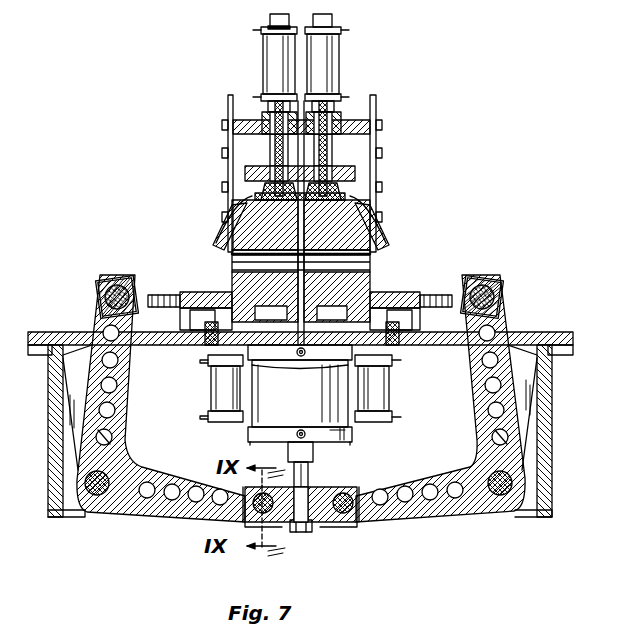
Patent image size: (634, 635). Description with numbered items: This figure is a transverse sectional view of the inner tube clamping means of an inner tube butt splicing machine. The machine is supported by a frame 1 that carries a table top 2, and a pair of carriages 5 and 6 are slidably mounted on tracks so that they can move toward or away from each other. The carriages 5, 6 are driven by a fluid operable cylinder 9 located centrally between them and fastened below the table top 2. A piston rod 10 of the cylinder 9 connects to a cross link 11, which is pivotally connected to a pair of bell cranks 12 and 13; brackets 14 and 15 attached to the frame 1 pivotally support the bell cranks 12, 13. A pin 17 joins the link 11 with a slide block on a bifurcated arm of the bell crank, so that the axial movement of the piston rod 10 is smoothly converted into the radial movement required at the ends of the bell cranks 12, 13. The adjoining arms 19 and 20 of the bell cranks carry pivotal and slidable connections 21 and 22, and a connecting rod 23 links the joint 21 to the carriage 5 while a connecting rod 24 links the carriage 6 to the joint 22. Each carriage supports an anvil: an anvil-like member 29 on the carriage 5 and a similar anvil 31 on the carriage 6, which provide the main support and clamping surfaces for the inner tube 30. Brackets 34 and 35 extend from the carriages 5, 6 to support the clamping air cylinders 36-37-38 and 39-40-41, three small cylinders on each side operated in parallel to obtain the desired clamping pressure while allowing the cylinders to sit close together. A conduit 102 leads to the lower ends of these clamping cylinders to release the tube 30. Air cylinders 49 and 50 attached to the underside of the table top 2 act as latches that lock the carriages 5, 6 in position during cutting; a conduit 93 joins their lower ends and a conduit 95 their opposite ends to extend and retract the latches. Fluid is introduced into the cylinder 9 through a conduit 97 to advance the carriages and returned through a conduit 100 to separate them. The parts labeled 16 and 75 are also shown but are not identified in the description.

The frame 1 is at (553, 432).
The table top 2 is at (560, 334).
The carriage 5 is at (232, 278).
The carriage 6 is at (368, 280).
The fluid operable cylinder 9 is at (352, 434).
The piston rod 10 is at (310, 500).
The cross link 11 is at (325, 520).
The bell crank 12 is at (135, 512).
The bell crank 13 is at (455, 500).
The bracket 14 is at (68, 516).
The bracket 15 is at (525, 512).
The central bearing block 16 is at (343, 488).
The pin 17 is at (335, 523).
The adjoining arm of bell crank 19 is at (100, 325).
The adjoining arm of bell crank 20 is at (505, 330).
The pivotal and slidable connection 21 is at (103, 293).
The pivotal and slidable connection 22 is at (497, 293).
The connecting rod 23 is at (140, 292).
The connecting rod 24 is at (455, 292).
The anvil-like member 29 is at (262, 232).
The inner tube 30 is at (375, 240).
The anvil 31 is at (350, 200).
The bracket 34 is at (228, 112).
The bracket 35 is at (376, 115).
The air cylinders 36-37-38 is at (272, 58).
The air cylinders 39-40-41 is at (340, 58).
The air cylinder 49 is at (215, 393).
The air cylinder 50 is at (386, 393).
The cylinder cap 75 is at (262, 30).
The conduit 93 is at (200, 418).
The conduit 95 is at (200, 361).
The conduit 97 is at (300, 362).
The conduit 100 is at (250, 433).
The conduit 102 is at (262, 96).